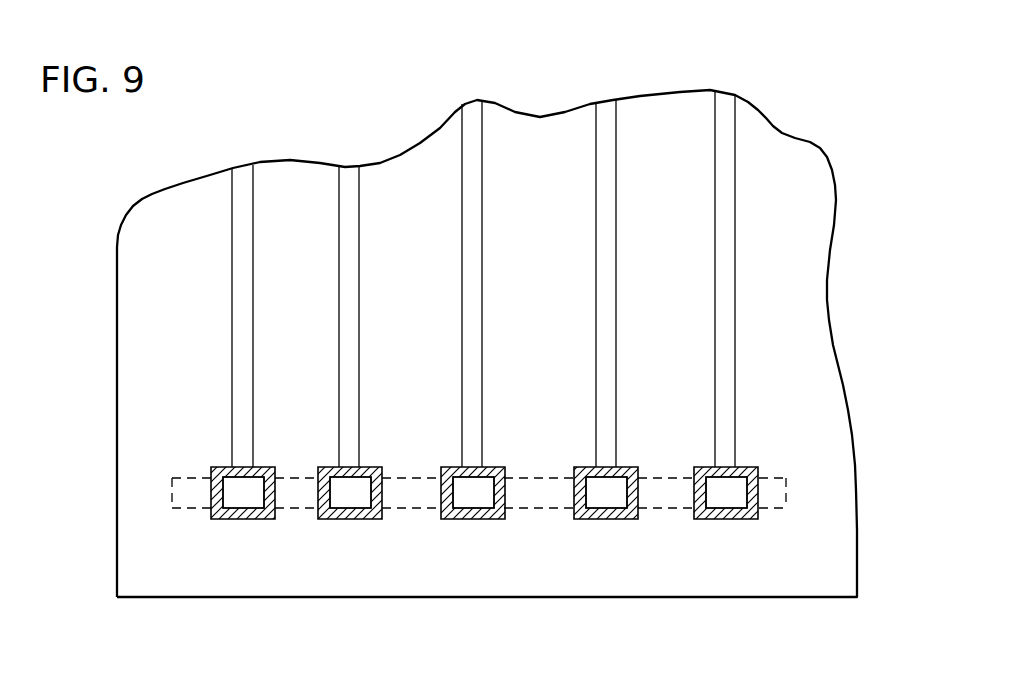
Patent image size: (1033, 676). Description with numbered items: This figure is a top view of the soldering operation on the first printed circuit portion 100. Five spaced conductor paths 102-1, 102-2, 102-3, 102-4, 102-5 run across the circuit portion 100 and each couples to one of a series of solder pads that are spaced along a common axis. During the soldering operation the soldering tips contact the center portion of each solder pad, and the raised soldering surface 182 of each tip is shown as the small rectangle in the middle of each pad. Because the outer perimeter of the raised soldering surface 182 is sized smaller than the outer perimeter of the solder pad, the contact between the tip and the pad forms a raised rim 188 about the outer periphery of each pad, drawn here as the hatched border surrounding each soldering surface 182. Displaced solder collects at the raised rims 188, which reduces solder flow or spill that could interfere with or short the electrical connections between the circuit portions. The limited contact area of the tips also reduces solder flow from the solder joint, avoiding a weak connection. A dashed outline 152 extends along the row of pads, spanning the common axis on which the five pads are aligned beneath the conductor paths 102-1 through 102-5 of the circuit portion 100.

The first printed circuit portion 100 is at (843, 377).
The conductor path 102-1 is at (725, 110).
The conductor path 102-2 is at (605, 108).
The conductor path 102-3 is at (468, 112).
The conductor path 102-4 is at (347, 178).
The conductor path 102-5 is at (240, 188).
The region outline 152 is at (772, 490).
The raised soldering surface 182 is at (243, 497).
The raised rim 188 is at (217, 472).